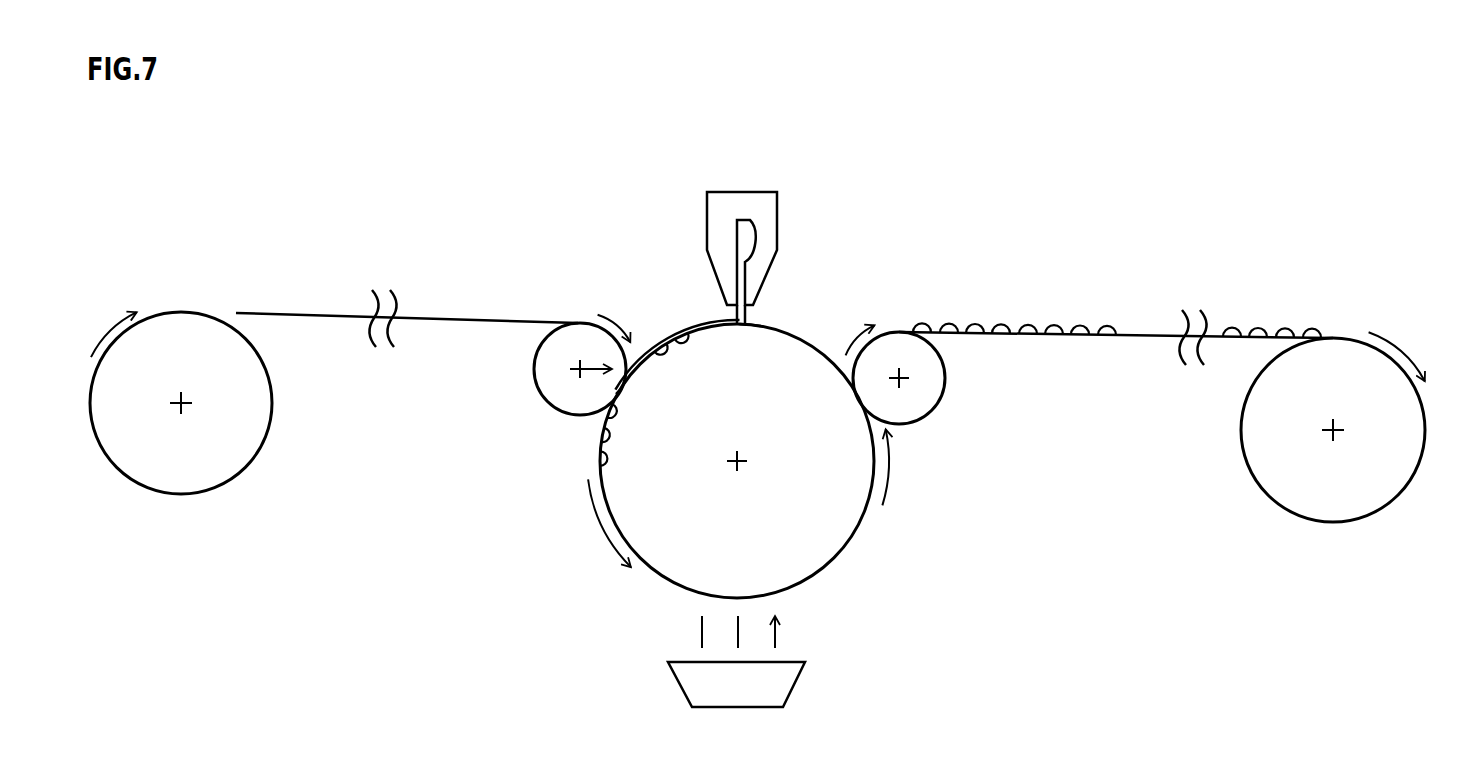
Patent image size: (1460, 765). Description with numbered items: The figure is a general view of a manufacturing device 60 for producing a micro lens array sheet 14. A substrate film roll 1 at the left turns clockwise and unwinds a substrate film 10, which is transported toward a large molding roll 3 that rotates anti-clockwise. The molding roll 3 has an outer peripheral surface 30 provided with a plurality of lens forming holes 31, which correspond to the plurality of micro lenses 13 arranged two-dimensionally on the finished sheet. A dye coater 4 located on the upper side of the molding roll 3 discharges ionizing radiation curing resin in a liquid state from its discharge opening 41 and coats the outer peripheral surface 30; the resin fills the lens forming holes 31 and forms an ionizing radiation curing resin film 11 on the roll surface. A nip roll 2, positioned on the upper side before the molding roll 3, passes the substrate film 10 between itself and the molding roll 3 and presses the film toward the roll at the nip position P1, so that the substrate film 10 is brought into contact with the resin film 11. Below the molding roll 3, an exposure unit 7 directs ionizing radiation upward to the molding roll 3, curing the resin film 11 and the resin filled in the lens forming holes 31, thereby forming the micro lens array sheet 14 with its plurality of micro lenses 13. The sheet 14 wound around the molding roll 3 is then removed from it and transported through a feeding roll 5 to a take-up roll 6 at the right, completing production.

The manufacturing device 60 is at (755, 109).
The substrate film roll 1 is at (272, 405).
The substrate film 10 is at (278, 315).
The nip roll 2 is at (580, 416).
The molding roll 3 is at (850, 510).
The ionizing radiation curing resin film 11 is at (707, 318).
The nip position P1 is at (623, 392).
The lens forming holes 31 is at (690, 341).
The dye coater 4 is at (777, 215).
The discharge port 41 is at (758, 313).
The outer peripheral surface 30 is at (735, 328).
The feeding roll 5 is at (945, 380).
The micro lens array sheet 14 is at (1070, 340).
The micro lenses 13 is at (922, 323).
The take-up roll 6 is at (1418, 458).
The exposure unit 7 is at (800, 680).